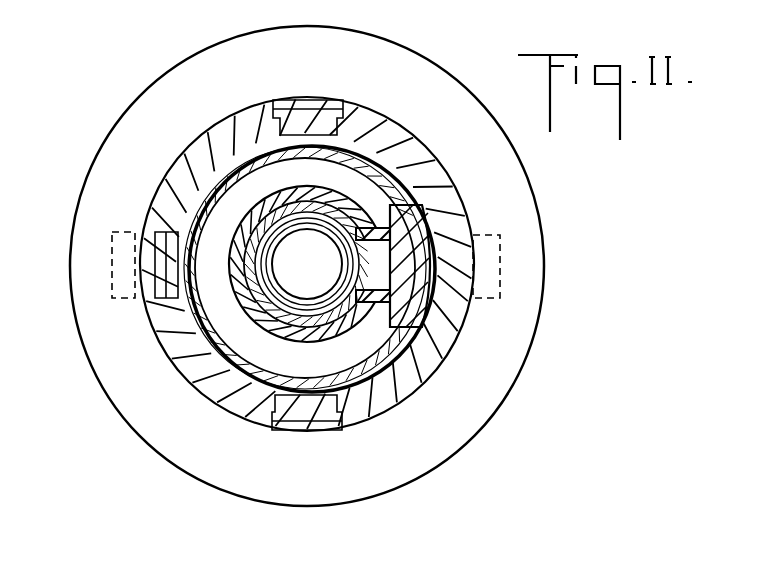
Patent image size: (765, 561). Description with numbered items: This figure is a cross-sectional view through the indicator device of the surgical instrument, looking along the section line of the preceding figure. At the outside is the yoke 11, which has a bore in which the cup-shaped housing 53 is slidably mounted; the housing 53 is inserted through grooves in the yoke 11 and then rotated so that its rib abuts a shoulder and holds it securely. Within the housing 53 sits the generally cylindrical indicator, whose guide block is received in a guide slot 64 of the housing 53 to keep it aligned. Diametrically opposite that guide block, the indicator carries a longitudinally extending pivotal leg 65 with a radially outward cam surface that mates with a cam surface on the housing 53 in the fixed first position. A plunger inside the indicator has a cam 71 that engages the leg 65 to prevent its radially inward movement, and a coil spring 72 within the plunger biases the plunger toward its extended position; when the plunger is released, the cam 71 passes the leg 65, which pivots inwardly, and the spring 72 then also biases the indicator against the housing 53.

The yoke 11 is at (530, 302).
The cam 71 is at (212, 158).
The guide slot 64 is at (172, 236).
The coil spring 72 is at (276, 244).
The housing 53 is at (432, 204).
The pivotal leg 65 is at (412, 312).